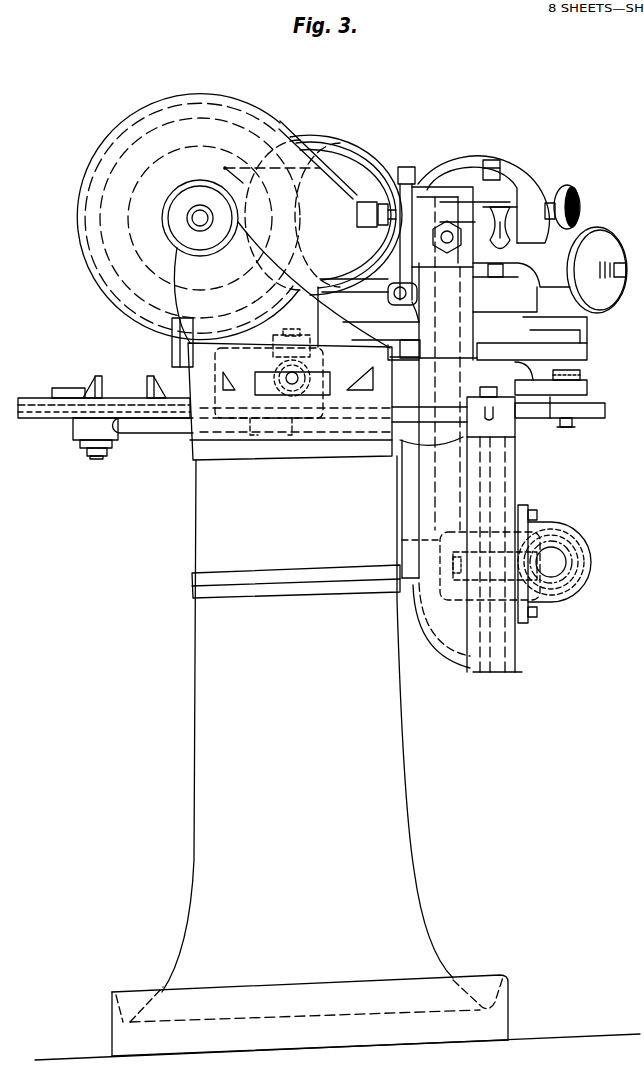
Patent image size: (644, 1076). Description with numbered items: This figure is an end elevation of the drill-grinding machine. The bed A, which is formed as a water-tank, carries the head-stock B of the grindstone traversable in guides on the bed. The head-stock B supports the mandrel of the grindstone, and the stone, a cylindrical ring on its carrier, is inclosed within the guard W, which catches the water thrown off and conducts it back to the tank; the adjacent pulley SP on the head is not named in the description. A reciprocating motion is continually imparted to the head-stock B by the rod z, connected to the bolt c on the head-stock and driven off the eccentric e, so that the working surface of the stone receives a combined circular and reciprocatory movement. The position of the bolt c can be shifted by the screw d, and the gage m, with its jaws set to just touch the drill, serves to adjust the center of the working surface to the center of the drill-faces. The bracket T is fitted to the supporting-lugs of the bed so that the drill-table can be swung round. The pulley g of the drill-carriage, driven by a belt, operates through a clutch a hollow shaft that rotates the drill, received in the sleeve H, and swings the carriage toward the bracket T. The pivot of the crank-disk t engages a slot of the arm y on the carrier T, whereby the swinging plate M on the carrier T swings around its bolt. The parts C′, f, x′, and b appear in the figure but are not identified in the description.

The bed A is at (197, 894).
The guard W is at (247, 112).
The head-stock B is at (184, 271).
The spindle pulley SP is at (360, 152).
The sleeve H is at (412, 193).
The clamp C′ is at (447, 200).
The fork f is at (504, 203).
The pulley g is at (593, 310).
The swinging plate M is at (530, 303).
The bracket T is at (528, 352).
The wedge x′ is at (581, 376).
The crank-disk t is at (549, 393).
The arm y is at (605, 419).
The eccentric e is at (515, 440).
The roller b is at (552, 525).
The screw d is at (56, 420).
The gage m is at (143, 387).
The bolt c is at (96, 459).
The rod z is at (156, 434).